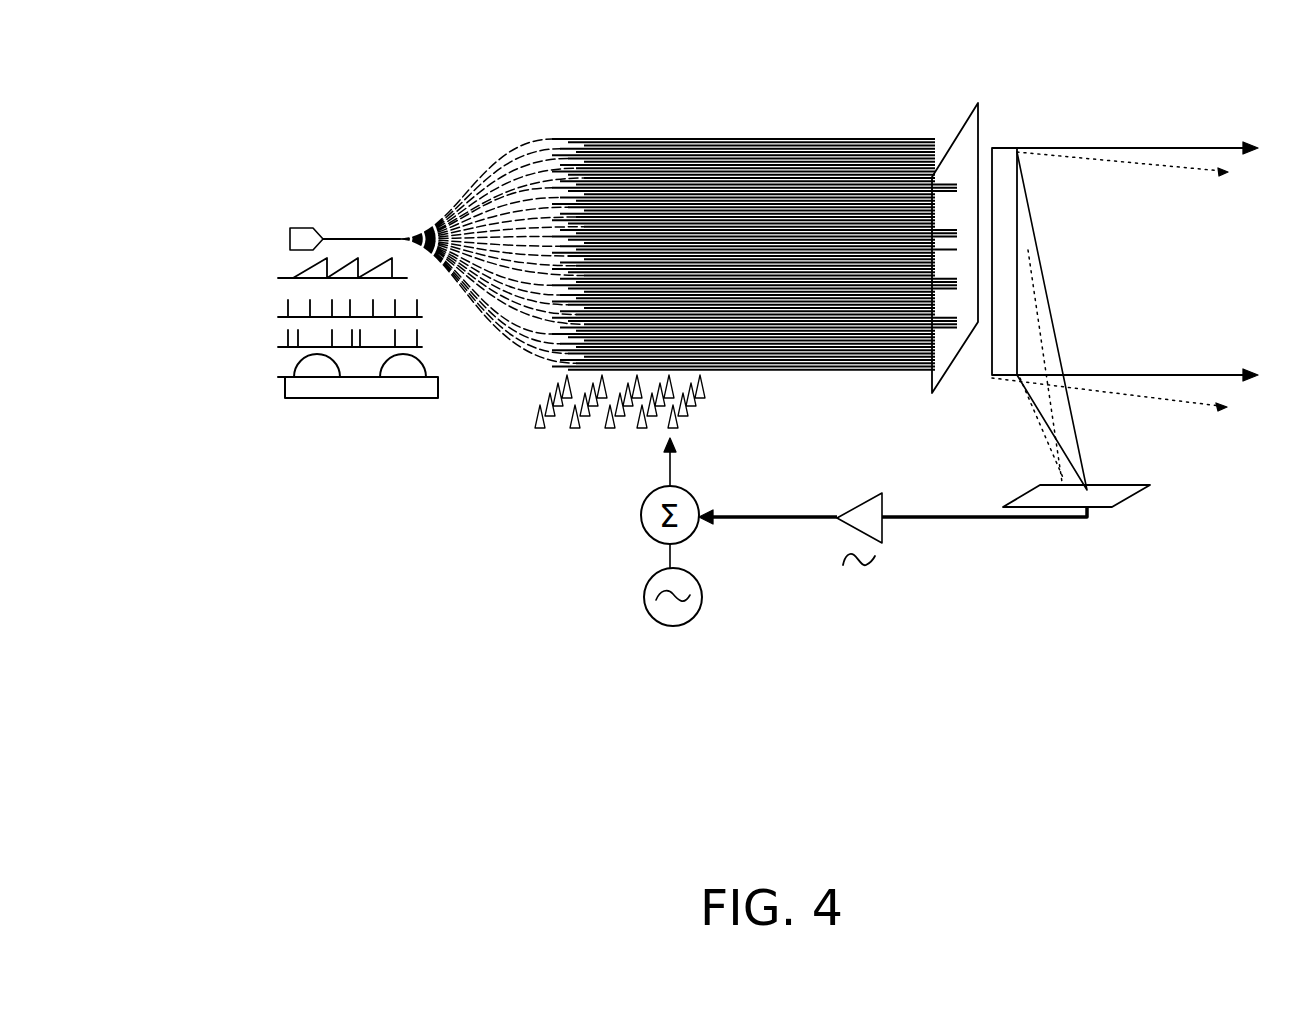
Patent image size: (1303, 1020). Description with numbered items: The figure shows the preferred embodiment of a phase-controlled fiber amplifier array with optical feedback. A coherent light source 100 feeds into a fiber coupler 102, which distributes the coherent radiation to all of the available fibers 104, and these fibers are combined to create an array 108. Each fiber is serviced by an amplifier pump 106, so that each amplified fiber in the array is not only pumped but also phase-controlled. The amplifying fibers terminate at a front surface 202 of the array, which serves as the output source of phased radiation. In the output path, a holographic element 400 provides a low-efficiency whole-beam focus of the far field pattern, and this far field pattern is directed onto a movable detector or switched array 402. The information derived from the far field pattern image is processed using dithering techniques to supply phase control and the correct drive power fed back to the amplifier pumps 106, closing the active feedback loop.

The coherent light source 100 is at (352, 280).
The fiber coupler 102 is at (407, 233).
The fibers 104 is at (737, 147).
The amplifier pumps 106 is at (580, 435).
The array 108 is at (910, 127).
The front surface 202 is at (980, 138).
The holographic element 400 is at (1017, 270).
The movable detector or switched array 402 is at (1127, 485).